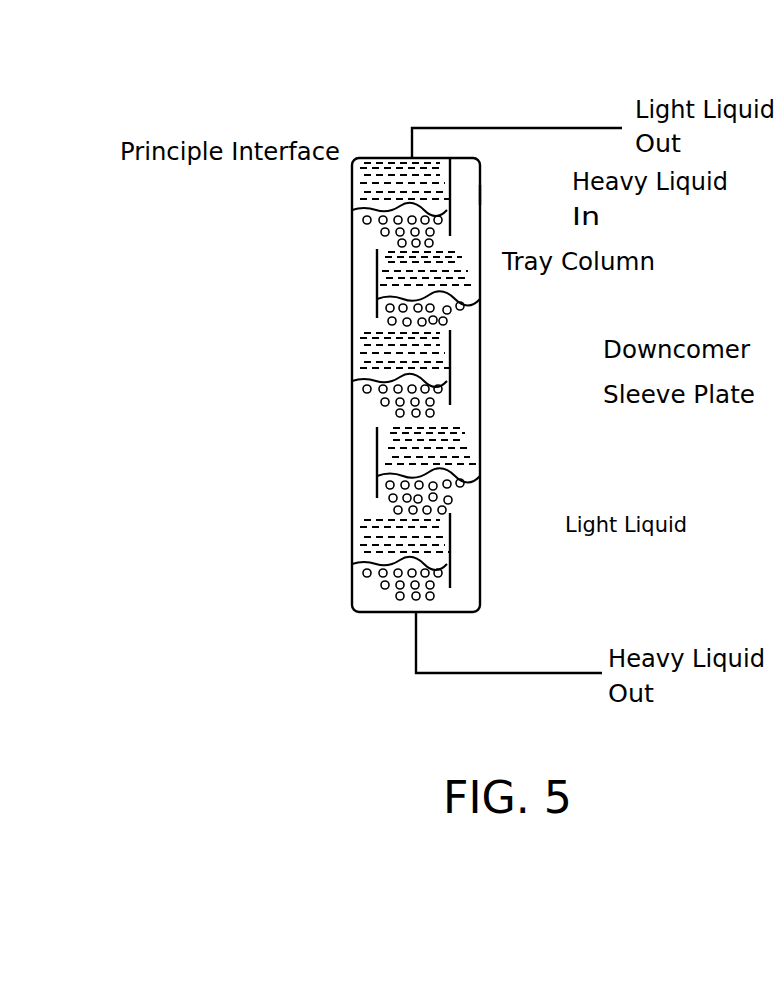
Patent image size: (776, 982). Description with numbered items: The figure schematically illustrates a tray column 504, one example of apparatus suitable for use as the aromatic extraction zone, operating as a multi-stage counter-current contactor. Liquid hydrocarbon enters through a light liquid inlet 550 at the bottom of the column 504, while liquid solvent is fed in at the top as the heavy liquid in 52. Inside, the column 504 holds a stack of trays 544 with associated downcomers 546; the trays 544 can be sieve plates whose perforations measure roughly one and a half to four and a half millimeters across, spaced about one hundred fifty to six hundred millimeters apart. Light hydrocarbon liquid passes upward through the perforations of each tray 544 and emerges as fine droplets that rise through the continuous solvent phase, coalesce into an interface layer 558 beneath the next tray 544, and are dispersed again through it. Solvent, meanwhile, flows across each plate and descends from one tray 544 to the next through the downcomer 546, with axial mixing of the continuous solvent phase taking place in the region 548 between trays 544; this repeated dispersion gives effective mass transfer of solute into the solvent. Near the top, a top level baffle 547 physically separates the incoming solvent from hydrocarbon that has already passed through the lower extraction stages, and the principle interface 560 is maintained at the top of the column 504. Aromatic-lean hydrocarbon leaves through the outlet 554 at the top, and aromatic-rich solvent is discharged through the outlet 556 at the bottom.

The tray column 504 is at (273, 122).
The principle interface 560 is at (372, 208).
The top level baffle 547 is at (450, 187).
The outlet 554 is at (572, 143).
The heavy liquid inlet 52 is at (481, 195).
The downcomer 546 is at (451, 355).
The tray 544 is at (437, 432).
The region 548 is at (495, 452).
The interface layer 558 is at (385, 465).
The light liquid inlet 550 is at (481, 553).
The outlet 556 is at (559, 660).